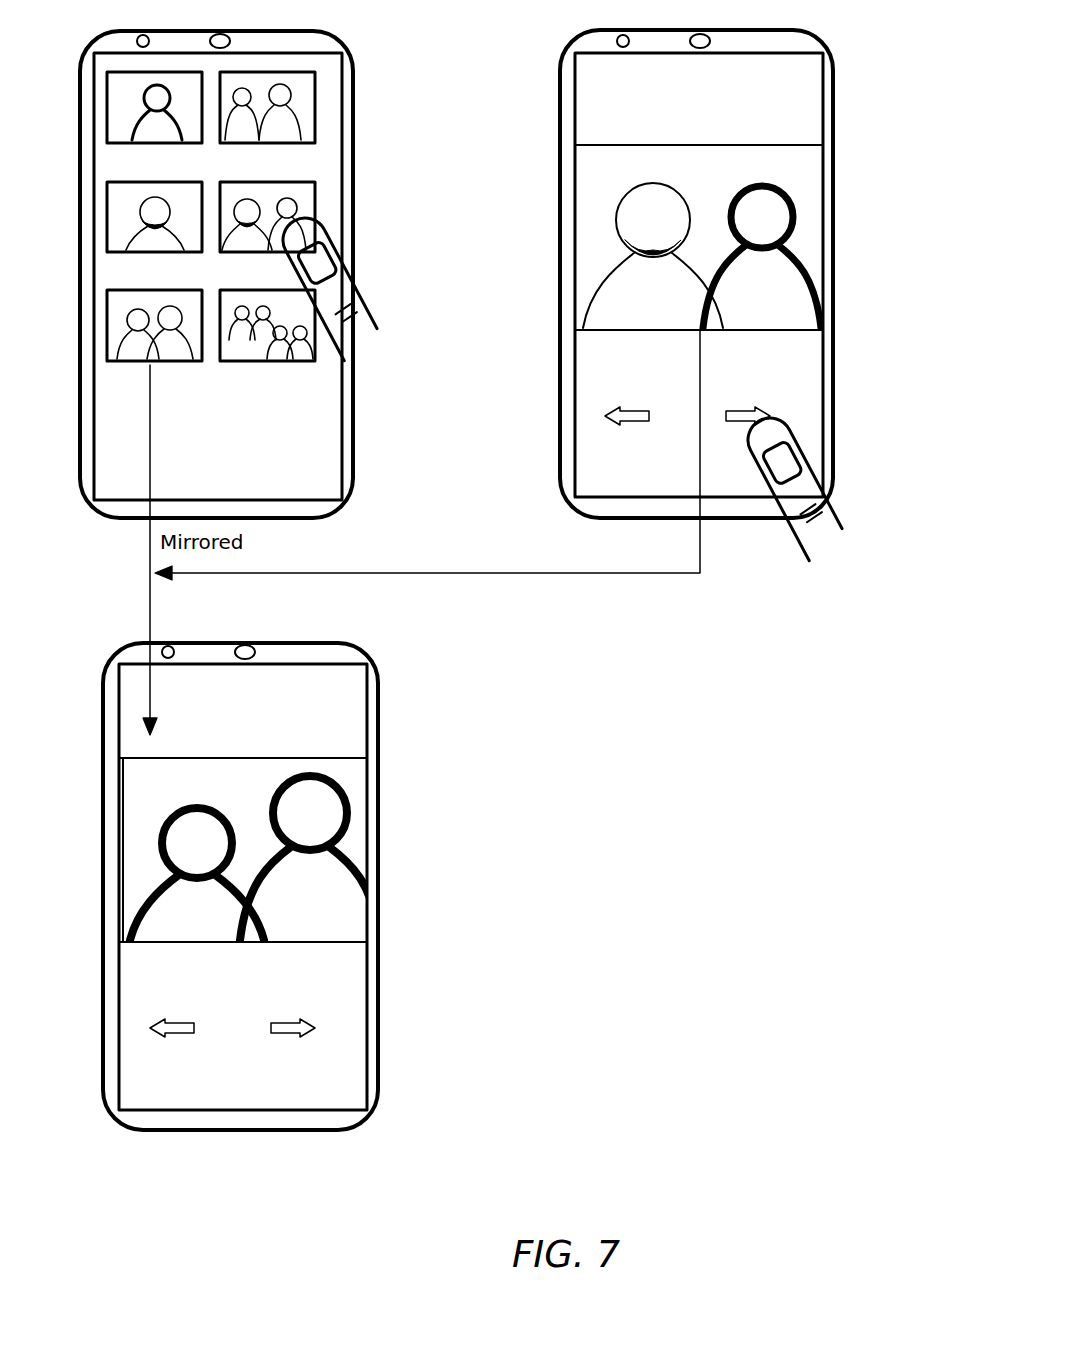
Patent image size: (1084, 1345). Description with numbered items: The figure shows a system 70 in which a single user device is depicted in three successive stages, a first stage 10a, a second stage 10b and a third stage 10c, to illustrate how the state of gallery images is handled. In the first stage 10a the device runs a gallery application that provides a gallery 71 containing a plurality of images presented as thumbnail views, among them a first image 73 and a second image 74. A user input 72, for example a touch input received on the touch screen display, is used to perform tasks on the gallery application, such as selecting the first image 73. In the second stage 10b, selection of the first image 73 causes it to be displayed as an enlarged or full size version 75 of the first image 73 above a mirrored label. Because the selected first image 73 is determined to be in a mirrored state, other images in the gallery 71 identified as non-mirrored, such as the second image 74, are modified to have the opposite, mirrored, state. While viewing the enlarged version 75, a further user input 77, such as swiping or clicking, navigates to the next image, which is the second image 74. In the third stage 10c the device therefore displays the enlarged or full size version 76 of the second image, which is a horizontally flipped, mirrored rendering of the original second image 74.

The first stage 10a is at (353, 87).
The second stage 10b is at (833, 113).
The third stage 10c is at (378, 718).
The system 70 is at (653, 981).
The gallery 71 is at (325, 145).
The user input 72 is at (373, 298).
The first image 73 is at (300, 215).
The second image 74 is at (175, 358).
The enlarged or full size version of the first image 75 is at (802, 208).
The enlarged or full size version of the second image 76 is at (352, 827).
The further user input 77 is at (833, 493).